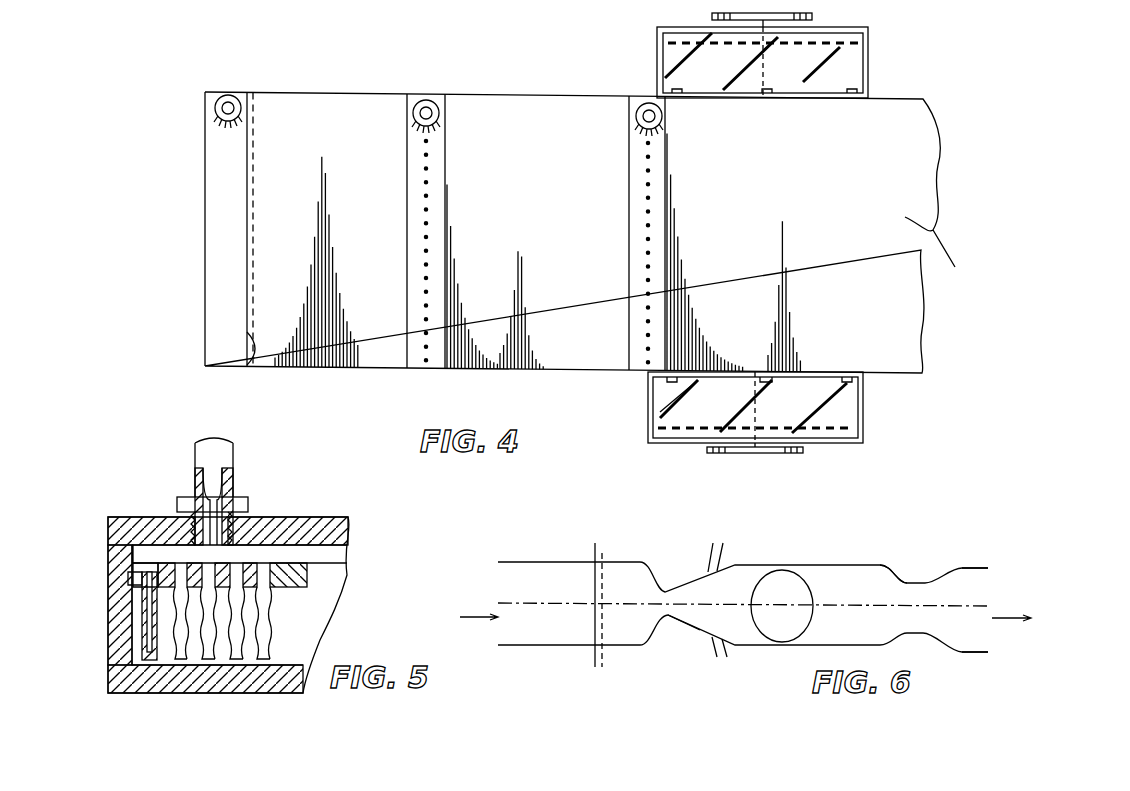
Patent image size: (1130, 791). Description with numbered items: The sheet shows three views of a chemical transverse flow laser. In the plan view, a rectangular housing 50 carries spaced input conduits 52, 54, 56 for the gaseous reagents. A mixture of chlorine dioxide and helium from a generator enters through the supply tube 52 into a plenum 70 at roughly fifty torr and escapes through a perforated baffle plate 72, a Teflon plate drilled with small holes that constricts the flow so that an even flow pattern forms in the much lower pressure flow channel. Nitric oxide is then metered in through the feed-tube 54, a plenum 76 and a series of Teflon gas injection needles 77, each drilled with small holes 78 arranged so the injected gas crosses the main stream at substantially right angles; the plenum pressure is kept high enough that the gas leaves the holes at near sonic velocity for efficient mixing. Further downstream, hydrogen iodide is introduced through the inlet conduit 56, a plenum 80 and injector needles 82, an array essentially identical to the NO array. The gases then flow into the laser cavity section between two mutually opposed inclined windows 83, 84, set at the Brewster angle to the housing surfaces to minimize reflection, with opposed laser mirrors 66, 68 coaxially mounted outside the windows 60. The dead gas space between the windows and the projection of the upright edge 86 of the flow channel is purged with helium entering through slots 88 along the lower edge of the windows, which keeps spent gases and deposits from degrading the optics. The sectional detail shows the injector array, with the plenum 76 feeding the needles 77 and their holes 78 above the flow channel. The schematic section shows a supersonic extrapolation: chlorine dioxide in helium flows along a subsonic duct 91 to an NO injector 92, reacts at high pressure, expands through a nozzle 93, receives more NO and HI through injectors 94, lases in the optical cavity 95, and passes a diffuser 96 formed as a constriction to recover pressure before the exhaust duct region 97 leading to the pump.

In FIG. 4, the rectangular housing 50 is at (378, 364).
In FIG. 4, the input conduit 52 is at (229, 95).
In FIG. 4, the input conduit 54 is at (426, 100).
In FIG. 5, the input conduit 54 is at (218, 480).
In FIG. 4, the input conduit 56 is at (646, 103).
In FIG. 4, the opposed window 60 is at (695, 408).
In FIG. 4, the laser mirror 66 is at (800, 452).
In FIG. 4, the laser mirror 68 is at (814, 17).
In FIG. 4, the plenum 70 is at (217, 223).
In FIG. 4, the perforated baffle plate 72 is at (246, 367).
In FIG. 4, the plenum 76 is at (432, 196).
In FIG. 5, the plenum 76 is at (137, 548).
In FIG. 5, the gas injection needle 77 is at (140, 627).
In FIG. 5, the hole 78 is at (273, 617).
In FIG. 4, the plenum 80 is at (662, 233).
In FIG. 4, the injector needle 82 is at (646, 228).
In FIG. 4, the inclined window 83 is at (838, 74).
In FIG. 4, the inclined window 84 is at (833, 408).
In FIG. 4, the upright edge 86 is at (528, 370).
In FIG. 4, the slot 88 is at (858, 430).
In FIG. 6, the subsonic duct 91 is at (520, 646).
In FIG. 6, the NO injector 92 is at (590, 666).
In FIG. 6, the nozzle 93 is at (683, 623).
In FIG. 6, the injector 94 is at (723, 545).
In FIG. 6, the optical cavity 95 is at (805, 575).
In FIG. 6, the diffuser 96 is at (900, 576).
In FIG. 6, the exhaust duct region 97 is at (975, 610).